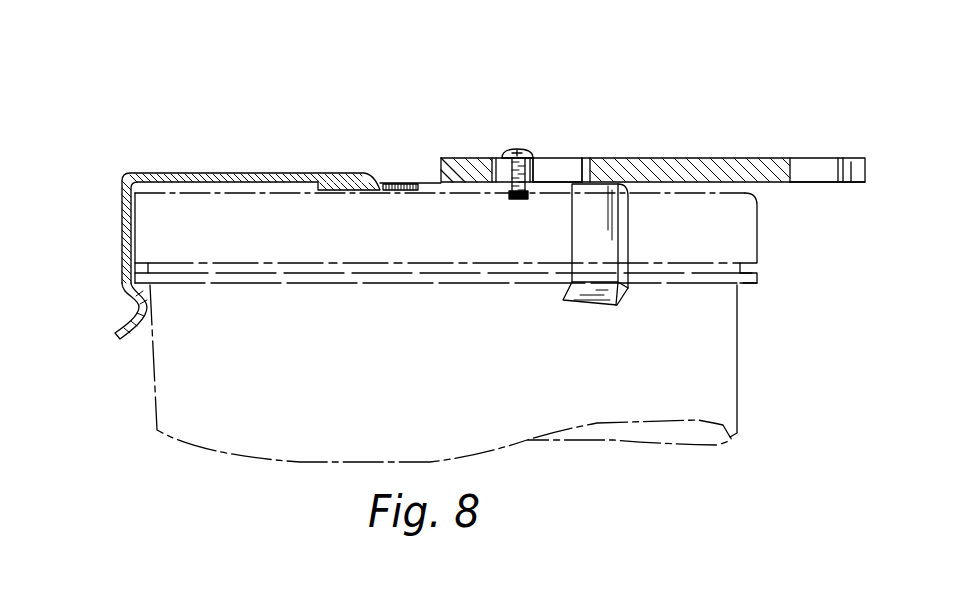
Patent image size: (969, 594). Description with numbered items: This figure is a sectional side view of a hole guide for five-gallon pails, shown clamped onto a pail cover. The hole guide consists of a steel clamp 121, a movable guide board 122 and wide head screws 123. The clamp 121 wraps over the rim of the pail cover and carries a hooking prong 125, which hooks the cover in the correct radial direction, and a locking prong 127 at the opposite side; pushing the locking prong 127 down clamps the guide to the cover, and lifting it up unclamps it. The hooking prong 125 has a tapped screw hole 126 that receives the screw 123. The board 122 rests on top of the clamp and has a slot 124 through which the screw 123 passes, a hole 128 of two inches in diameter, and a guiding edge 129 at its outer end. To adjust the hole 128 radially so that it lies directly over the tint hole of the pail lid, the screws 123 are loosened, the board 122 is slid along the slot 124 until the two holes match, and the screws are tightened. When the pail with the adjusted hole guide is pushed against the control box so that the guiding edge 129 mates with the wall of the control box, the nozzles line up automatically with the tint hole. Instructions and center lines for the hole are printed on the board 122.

The steel clamp 121 is at (290, 175).
The movable guide board 122 is at (722, 158).
The wide head screw 123 is at (507, 152).
The slot 124 is at (594, 166).
The hooking prong 125 is at (630, 234).
The tapped screw hole 126 is at (514, 198).
The locking prong 127 is at (123, 252).
The hole 128 is at (557, 172).
The guiding edge 129 is at (792, 178).